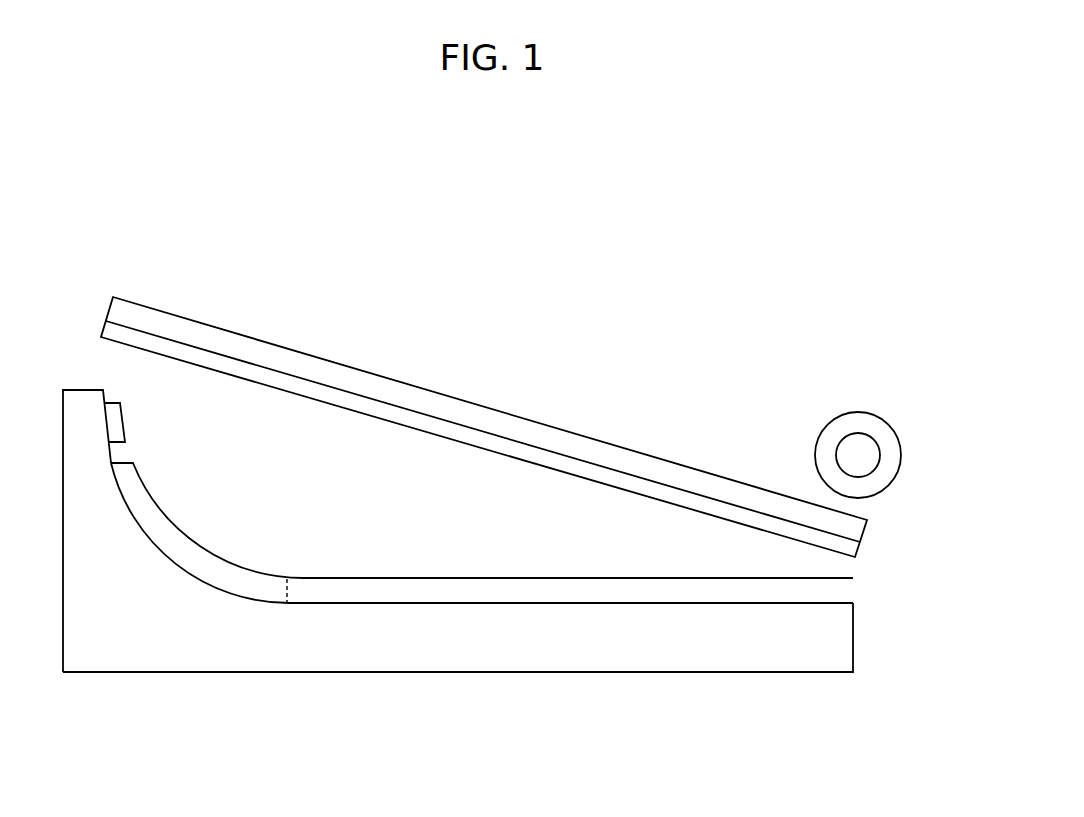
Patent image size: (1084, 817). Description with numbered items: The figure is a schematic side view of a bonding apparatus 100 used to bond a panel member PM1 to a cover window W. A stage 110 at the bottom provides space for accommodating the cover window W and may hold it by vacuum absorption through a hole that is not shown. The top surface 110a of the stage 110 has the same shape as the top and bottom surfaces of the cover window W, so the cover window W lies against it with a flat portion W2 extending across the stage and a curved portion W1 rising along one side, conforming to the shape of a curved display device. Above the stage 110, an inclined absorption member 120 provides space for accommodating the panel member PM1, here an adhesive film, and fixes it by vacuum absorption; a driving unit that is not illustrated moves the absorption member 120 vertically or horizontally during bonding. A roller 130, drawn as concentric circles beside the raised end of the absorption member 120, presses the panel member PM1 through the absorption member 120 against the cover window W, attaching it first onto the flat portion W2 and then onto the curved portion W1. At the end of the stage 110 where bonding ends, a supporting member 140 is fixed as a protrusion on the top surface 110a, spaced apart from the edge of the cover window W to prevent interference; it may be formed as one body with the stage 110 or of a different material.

The bonding apparatus 100 is at (685, 318).
The stage 110 is at (502, 567).
The top surface of the stage 110a is at (827, 601).
The absorption member 120 is at (484, 427).
The panel member PM1 is at (403, 420).
The roller 130 is at (856, 426).
The supporting member 140 is at (115, 420).
The cover window W is at (482, 593).
The curved portion W1 is at (198, 565).
The flat portion W2 is at (472, 585).